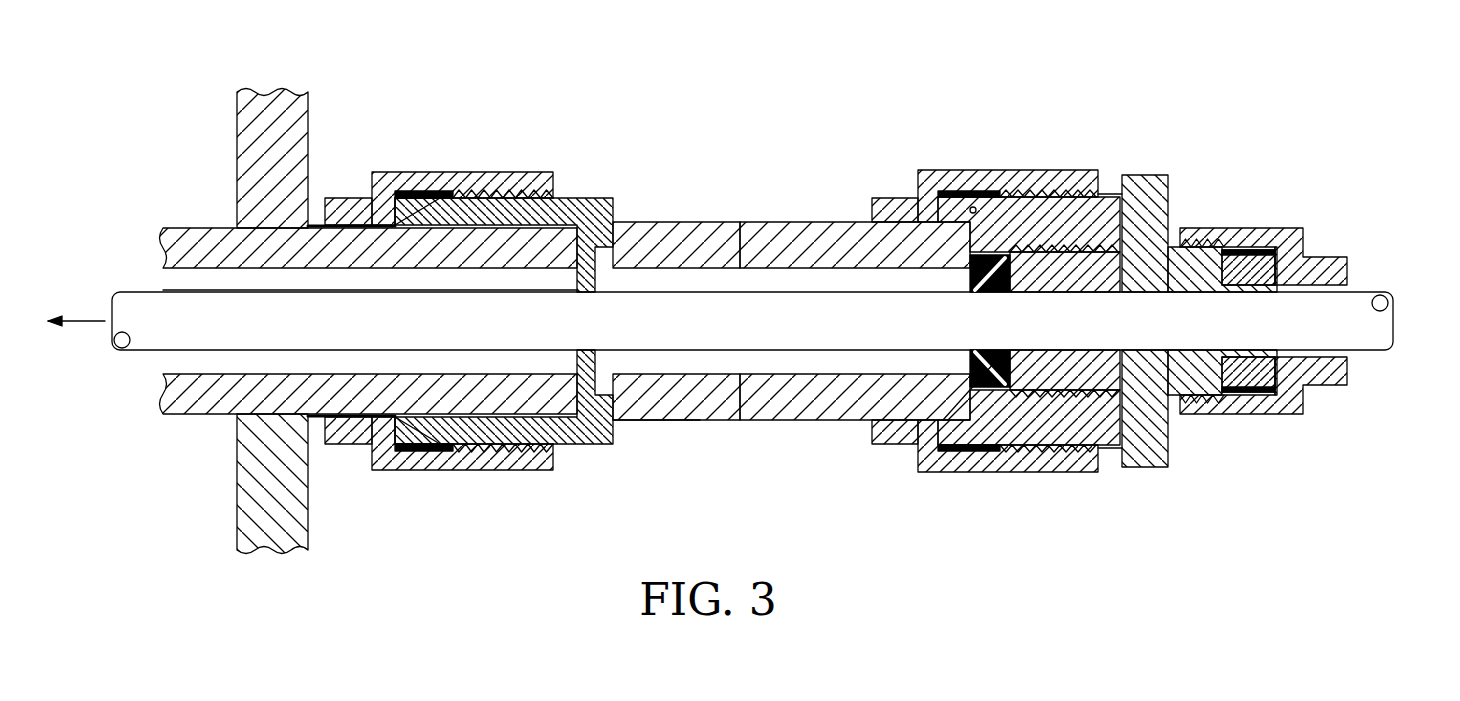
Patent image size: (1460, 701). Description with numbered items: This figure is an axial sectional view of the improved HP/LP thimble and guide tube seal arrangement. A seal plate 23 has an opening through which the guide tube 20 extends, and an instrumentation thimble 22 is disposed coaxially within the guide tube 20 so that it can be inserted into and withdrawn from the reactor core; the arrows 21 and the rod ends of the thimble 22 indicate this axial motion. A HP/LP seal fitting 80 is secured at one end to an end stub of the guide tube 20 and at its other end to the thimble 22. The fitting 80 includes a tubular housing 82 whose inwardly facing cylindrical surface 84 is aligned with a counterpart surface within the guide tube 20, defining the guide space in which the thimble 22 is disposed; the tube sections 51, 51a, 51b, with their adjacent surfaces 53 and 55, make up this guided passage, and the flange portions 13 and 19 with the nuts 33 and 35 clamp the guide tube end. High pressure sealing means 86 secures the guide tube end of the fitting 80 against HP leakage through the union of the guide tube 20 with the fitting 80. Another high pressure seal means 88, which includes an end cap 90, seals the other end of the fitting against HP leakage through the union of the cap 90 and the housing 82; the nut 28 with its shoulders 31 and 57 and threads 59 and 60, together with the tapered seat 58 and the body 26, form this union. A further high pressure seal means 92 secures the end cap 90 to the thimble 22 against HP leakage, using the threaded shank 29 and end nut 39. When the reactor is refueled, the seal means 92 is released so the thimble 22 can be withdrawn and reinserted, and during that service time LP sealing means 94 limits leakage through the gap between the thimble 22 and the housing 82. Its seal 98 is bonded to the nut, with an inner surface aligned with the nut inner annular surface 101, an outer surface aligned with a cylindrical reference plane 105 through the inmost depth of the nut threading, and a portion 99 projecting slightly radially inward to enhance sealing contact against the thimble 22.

The flange shoulder 13 is at (350, 240).
The lower flange shoulder 19 is at (313, 425).
The guide tube 20 is at (205, 232).
The direction of rod movement 21 is at (70, 322).
The instrumentation thimble 22 is at (150, 345).
The seal plate 23 is at (257, 98).
The fitting body 26 is at (1143, 447).
The coupling nut 28 is at (1073, 442).
The threaded shank 29 is at (1233, 410).
The nut shoulder 31 is at (970, 205).
The compression nut 33 is at (520, 172).
The compression nut lower portion 35 is at (420, 460).
The end nut 39 is at (1310, 400).
The tube assembly 51 is at (763, 185).
The tube collar 51a is at (600, 205).
The tube section 51b is at (826, 222).
The tube outer surface 53 is at (640, 425).
The lower collar 55 is at (573, 432).
The nut lower shoulder 57 is at (972, 442).
The tapered seat 58 is at (932, 450).
The nut threads 59 is at (988, 182).
The nut threads lower 60 is at (1025, 448).
The HP/LP seal fitting 80 is at (810, 420).
The tubular housing 82 is at (650, 232).
The inwardly facing cylindrical surface 84 is at (752, 362).
The high pressure sealing means 86 is at (420, 196).
The high pressure seal means 88 is at (1000, 470).
The end cap 90 is at (1145, 160).
The high pressure seal means 92 is at (1240, 262).
The LP sealing means 94 is at (963, 365).
The seal 98 is at (1008, 355).
The projecting portion 99 is at (990, 278).
The inner annular surface 101 is at (1090, 365).
The cylindrical reference plane 105 is at (1082, 268).